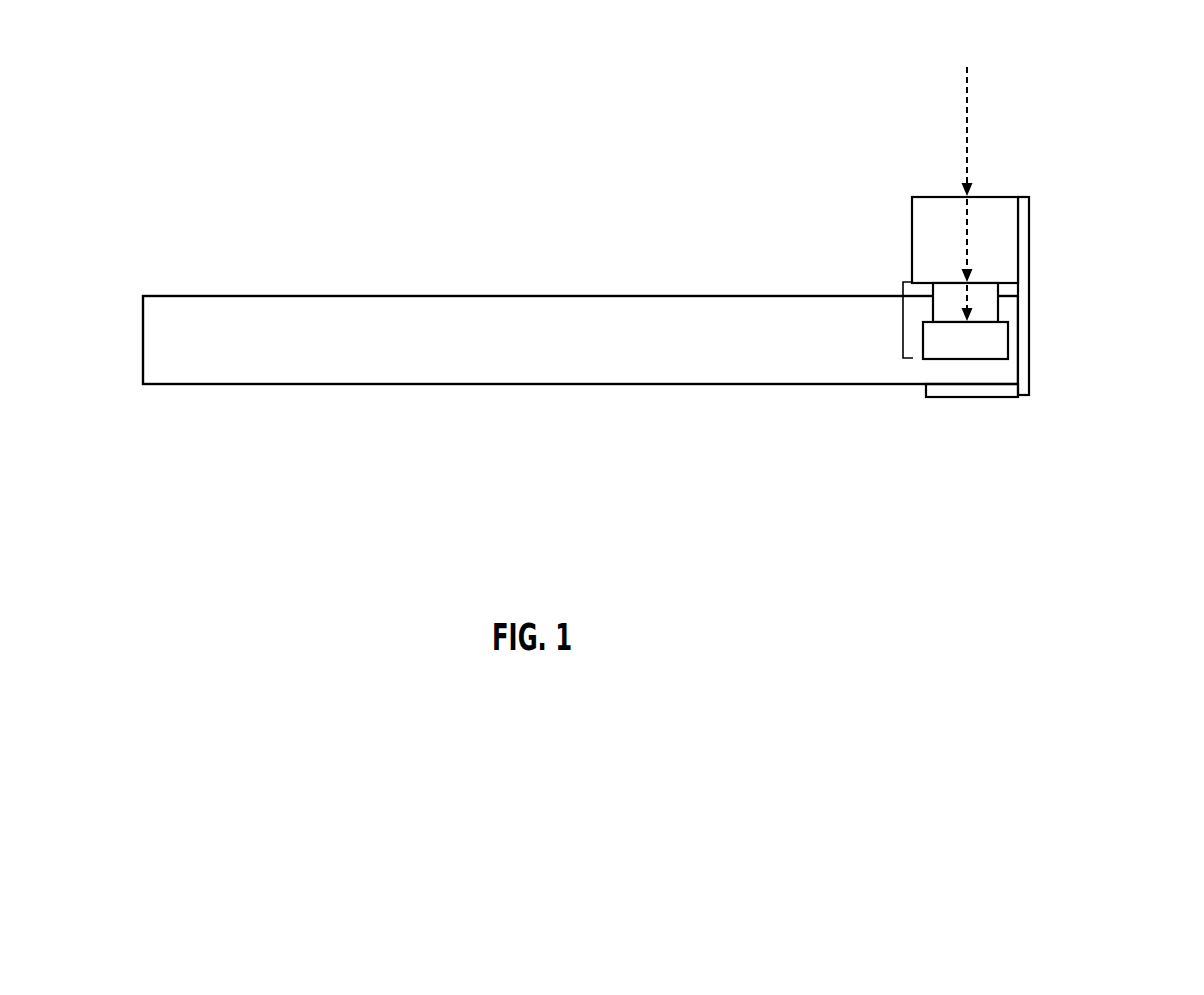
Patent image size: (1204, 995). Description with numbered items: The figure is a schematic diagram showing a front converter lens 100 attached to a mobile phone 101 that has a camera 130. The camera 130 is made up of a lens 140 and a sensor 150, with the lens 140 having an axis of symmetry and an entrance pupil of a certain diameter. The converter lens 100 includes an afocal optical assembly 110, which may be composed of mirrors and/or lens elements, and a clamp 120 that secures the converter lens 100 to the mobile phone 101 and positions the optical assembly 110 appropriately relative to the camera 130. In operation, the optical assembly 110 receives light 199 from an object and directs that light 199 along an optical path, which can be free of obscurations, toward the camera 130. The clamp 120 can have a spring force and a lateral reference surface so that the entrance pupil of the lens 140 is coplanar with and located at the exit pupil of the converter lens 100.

The front converter lens 100 is at (1100, 230).
The mobile phone 101 is at (563, 361).
The afocal optical assembly 110 is at (912, 240).
The clamp 120 is at (1030, 294).
The camera 130 is at (900, 322).
The lens 140 is at (952, 302).
The sensor 150 is at (967, 358).
The light 199 is at (968, 115).